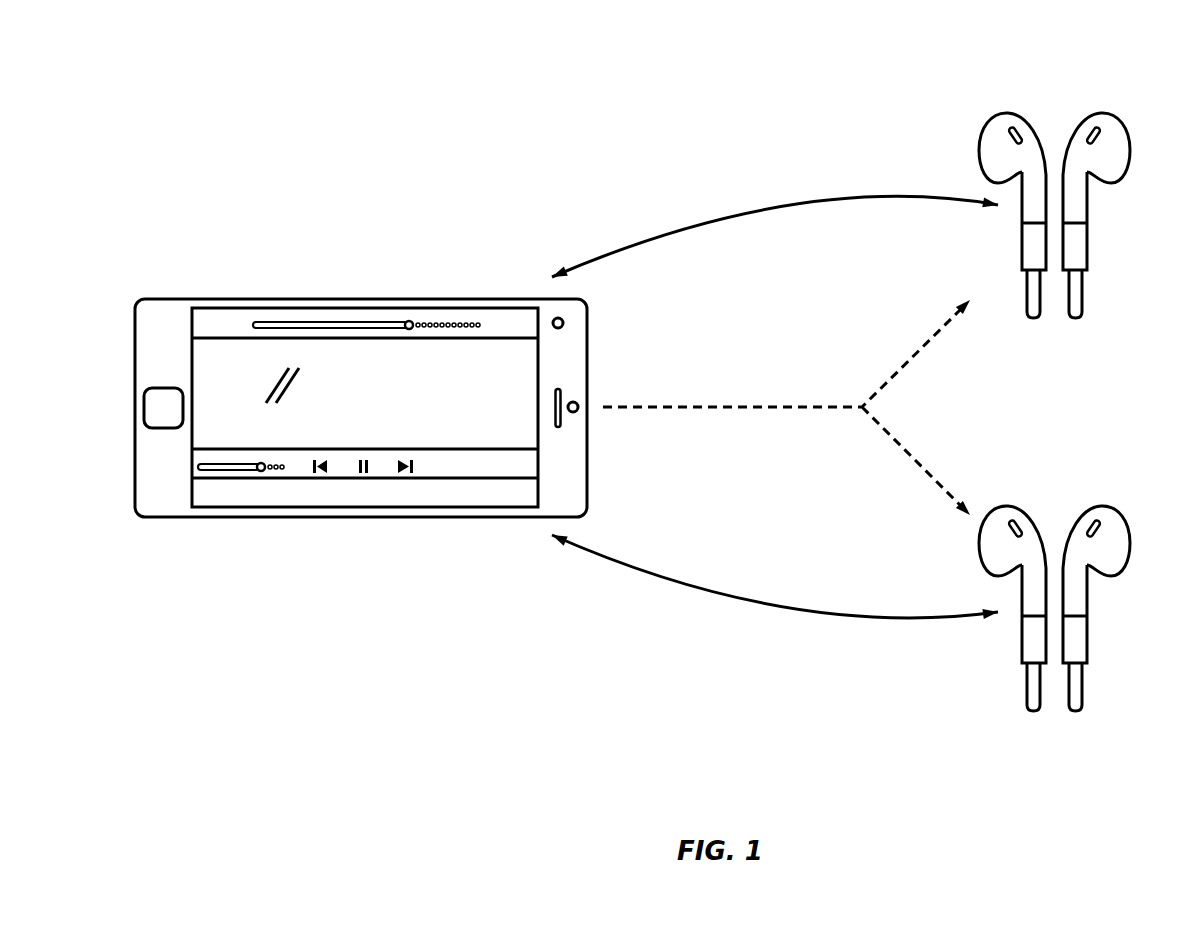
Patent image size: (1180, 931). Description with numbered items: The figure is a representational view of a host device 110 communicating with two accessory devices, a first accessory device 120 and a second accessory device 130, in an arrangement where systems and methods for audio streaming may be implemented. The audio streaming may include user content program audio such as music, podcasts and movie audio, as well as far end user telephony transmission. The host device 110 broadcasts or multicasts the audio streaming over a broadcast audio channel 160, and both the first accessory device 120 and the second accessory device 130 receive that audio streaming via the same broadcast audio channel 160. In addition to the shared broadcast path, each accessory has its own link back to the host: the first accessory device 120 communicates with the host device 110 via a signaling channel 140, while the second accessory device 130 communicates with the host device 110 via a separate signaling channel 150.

The host device 110 is at (442, 299).
The first accessory device 120 is at (975, 95).
The second accessory device 130 is at (975, 715).
The signaling channel 140 is at (775, 218).
The signaling channel 150 is at (775, 605).
The broadcast audio channel 160 is at (786, 407).